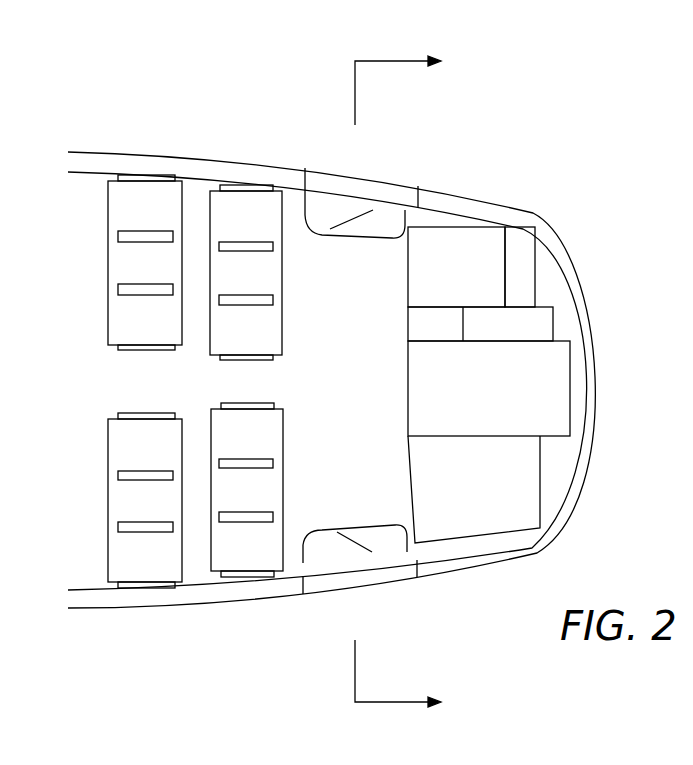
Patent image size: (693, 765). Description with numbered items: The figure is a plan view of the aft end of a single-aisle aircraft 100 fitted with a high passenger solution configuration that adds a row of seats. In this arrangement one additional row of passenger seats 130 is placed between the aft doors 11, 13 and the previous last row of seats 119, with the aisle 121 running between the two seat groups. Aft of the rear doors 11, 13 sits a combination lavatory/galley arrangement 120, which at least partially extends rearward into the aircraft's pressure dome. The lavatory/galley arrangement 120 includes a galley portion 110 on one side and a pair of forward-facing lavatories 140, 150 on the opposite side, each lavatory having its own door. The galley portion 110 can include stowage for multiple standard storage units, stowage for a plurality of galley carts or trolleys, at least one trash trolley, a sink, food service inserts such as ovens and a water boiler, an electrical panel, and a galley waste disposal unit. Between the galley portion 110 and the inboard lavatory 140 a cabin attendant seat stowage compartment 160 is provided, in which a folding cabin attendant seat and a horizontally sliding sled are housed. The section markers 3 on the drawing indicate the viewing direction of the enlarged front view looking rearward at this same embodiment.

The single-aisle aircraft 100 is at (515, 106).
The section line 3- 3 is at (410, 385).
The aft door 11 is at (372, 200).
The aft door 13 is at (355, 577).
The previous last row of seats 119 is at (128, 207).
The additional row of passenger seats 130 is at (232, 210).
The aisle 121 is at (206, 394).
The galley portion 110 is at (498, 290).
The lavatory/galley arrangement 120 is at (480, 224).
The cabin attendant seat stowage compartment 160 is at (430, 322).
The inboard lavatory 140 is at (553, 382).
The lavatory 150 is at (477, 520).